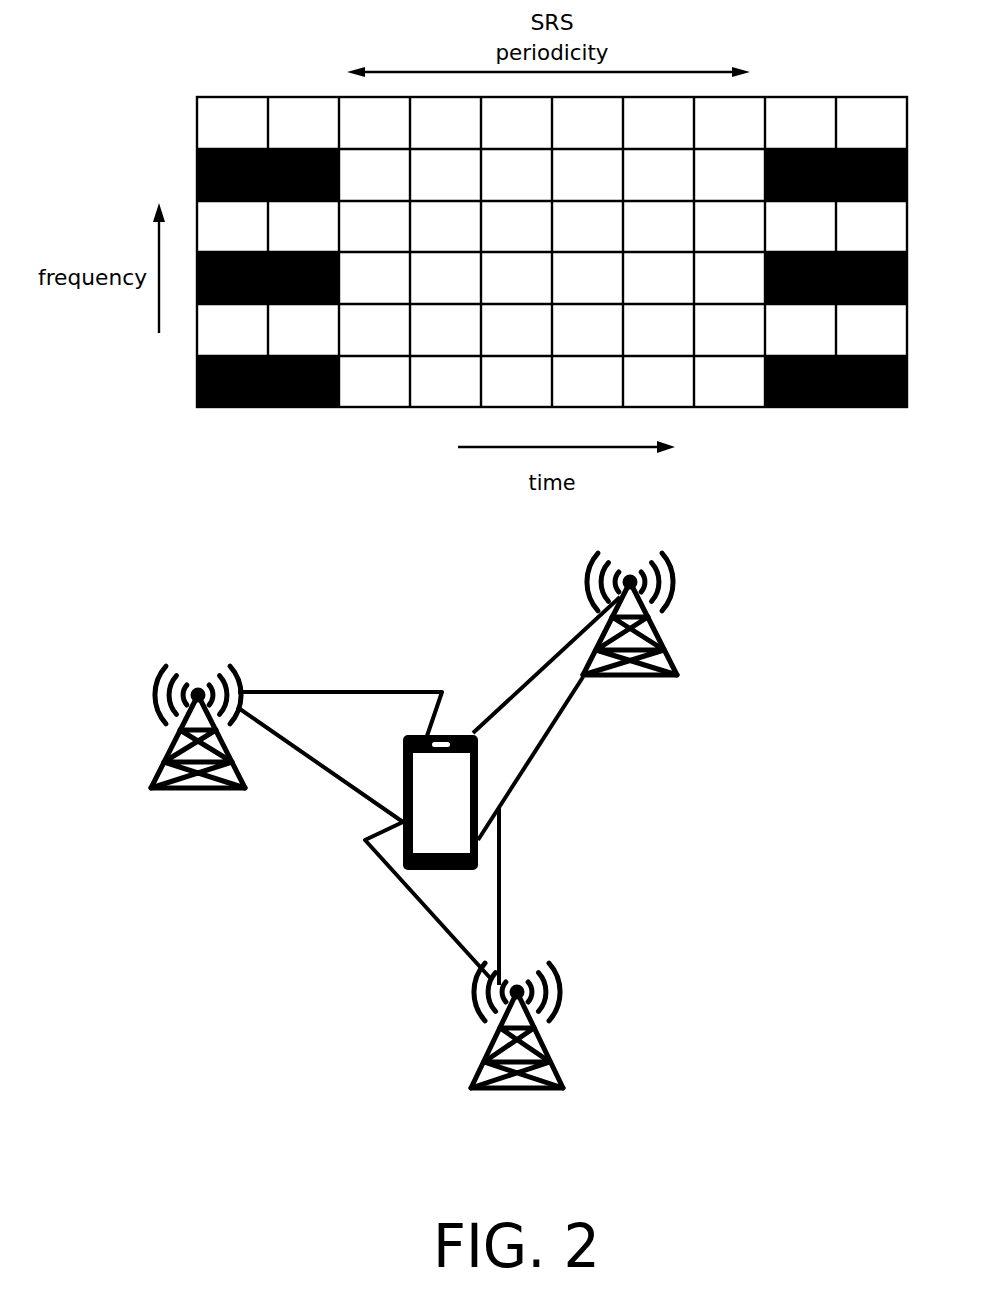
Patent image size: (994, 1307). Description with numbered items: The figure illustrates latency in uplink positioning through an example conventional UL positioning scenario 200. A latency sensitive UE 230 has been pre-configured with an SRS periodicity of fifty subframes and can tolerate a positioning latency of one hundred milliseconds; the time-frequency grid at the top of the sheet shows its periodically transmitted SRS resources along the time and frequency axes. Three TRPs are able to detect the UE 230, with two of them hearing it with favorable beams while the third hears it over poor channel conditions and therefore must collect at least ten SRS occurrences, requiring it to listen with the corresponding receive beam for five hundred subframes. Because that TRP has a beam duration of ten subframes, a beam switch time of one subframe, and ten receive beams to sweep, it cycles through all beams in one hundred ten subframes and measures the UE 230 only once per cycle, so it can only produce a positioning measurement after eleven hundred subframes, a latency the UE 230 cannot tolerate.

The UL positioning scenario 200 is at (170, 98).
The user equipment (UE) 230 is at (442, 822).